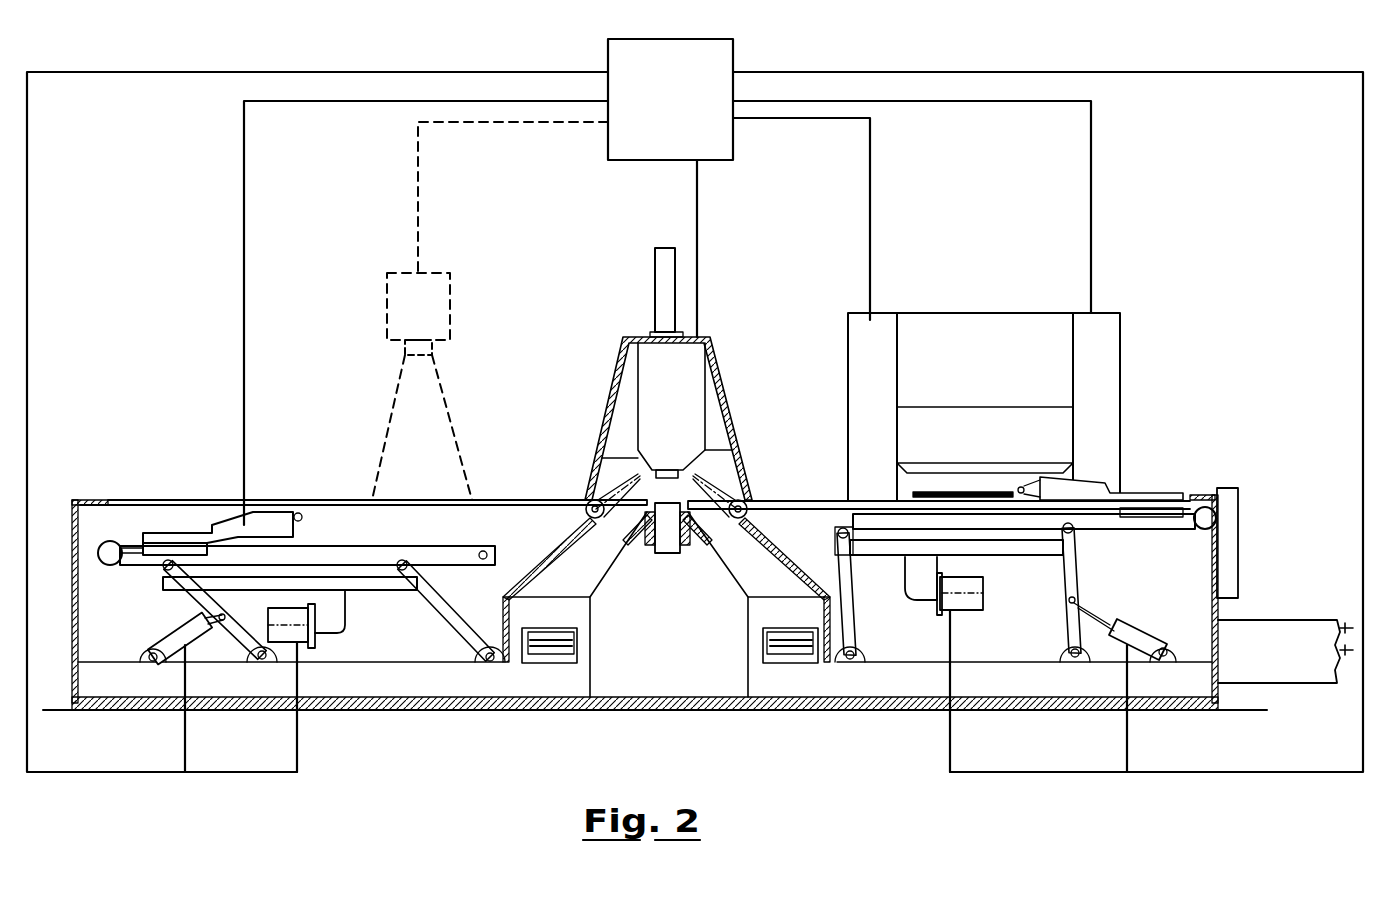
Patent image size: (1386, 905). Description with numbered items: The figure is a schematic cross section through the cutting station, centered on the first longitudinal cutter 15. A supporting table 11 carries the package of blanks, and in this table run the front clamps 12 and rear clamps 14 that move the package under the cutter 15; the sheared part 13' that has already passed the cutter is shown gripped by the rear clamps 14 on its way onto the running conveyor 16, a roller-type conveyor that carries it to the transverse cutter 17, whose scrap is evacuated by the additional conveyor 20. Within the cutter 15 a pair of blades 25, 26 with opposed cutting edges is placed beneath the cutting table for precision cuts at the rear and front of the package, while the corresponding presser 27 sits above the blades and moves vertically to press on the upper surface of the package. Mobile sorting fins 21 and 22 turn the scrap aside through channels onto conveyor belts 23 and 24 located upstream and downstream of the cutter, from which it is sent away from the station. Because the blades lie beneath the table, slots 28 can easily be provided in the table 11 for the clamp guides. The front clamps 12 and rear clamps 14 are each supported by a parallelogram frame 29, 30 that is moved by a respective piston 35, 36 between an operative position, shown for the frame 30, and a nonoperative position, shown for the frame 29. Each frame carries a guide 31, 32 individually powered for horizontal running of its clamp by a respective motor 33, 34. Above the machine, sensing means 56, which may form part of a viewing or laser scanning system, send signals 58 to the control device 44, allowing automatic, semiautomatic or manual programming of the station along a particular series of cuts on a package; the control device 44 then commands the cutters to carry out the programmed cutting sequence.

The supporting table 11 is at (161, 499).
The front clamps 12 is at (268, 520).
The sheared part (cut blank) 13' is at (963, 458).
The rear clamps 14 is at (1083, 490).
The first longitudinal cutter 15 is at (598, 317).
The running conveyor 16 is at (987, 505).
The transverse cutter 17 is at (965, 306).
The scrap conveyor 20 is at (1268, 620).
The mobile sorting fin 21 is at (620, 497).
The mobile sorting fin 22 is at (720, 497).
The conveyor belt 23 is at (555, 640).
The conveyor belt 24 is at (785, 640).
The blade 25 is at (660, 553).
The blade 26 is at (675, 553).
The presser 27 is at (667, 469).
The slot 28 is at (498, 499).
The parallelogram frame 29 is at (382, 603).
The parallelogram frame 30 is at (885, 572).
The guide 31 is at (352, 563).
The guide 32 is at (857, 520).
The motor 33 is at (305, 648).
The motor 34 is at (973, 596).
The piston 35 is at (177, 635).
The piston 36 is at (1125, 625).
The control device 44 is at (636, 70).
The signal sending means 56 is at (450, 285).
The signals 58 is at (417, 190).